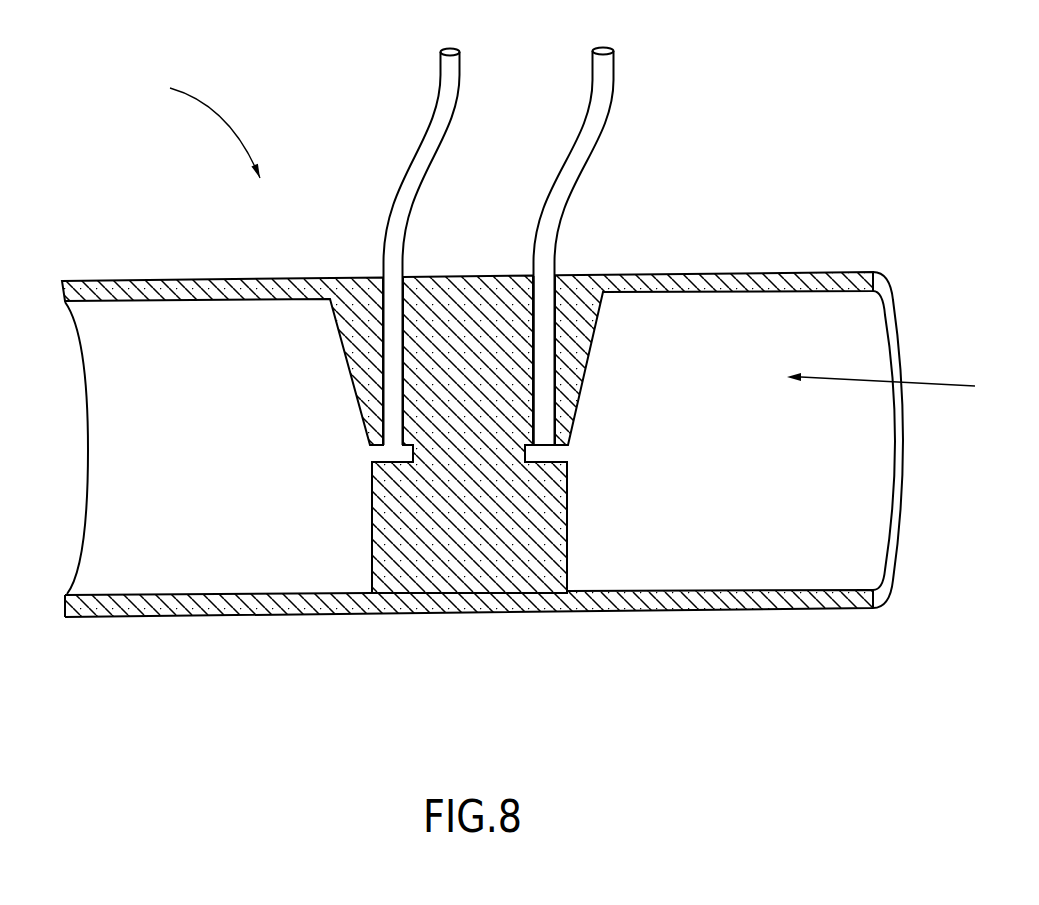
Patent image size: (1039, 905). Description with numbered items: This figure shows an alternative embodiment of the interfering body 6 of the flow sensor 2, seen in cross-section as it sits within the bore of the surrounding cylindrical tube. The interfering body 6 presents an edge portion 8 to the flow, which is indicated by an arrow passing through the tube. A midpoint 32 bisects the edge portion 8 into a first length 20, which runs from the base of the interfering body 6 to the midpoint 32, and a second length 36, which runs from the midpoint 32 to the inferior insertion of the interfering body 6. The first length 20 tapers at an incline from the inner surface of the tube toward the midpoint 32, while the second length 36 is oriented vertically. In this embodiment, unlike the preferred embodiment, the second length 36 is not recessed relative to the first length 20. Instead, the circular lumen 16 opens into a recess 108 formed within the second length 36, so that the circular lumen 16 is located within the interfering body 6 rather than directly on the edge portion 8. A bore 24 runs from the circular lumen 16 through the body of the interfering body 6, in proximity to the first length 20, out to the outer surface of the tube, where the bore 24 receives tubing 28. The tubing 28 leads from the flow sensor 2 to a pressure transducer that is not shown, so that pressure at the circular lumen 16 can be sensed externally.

The flow sensor 2 is at (205, 124).
The interfering body 6 is at (477, 563).
The edge portion 8 is at (890, 388).
The circular lumen 16 is at (542, 447).
The first length 20 is at (593, 340).
The bore 24 is at (542, 295).
The tubing 28 is at (600, 92).
The midpoint 32 is at (565, 443).
The second length 36 is at (567, 533).
The recess 108 is at (547, 445).